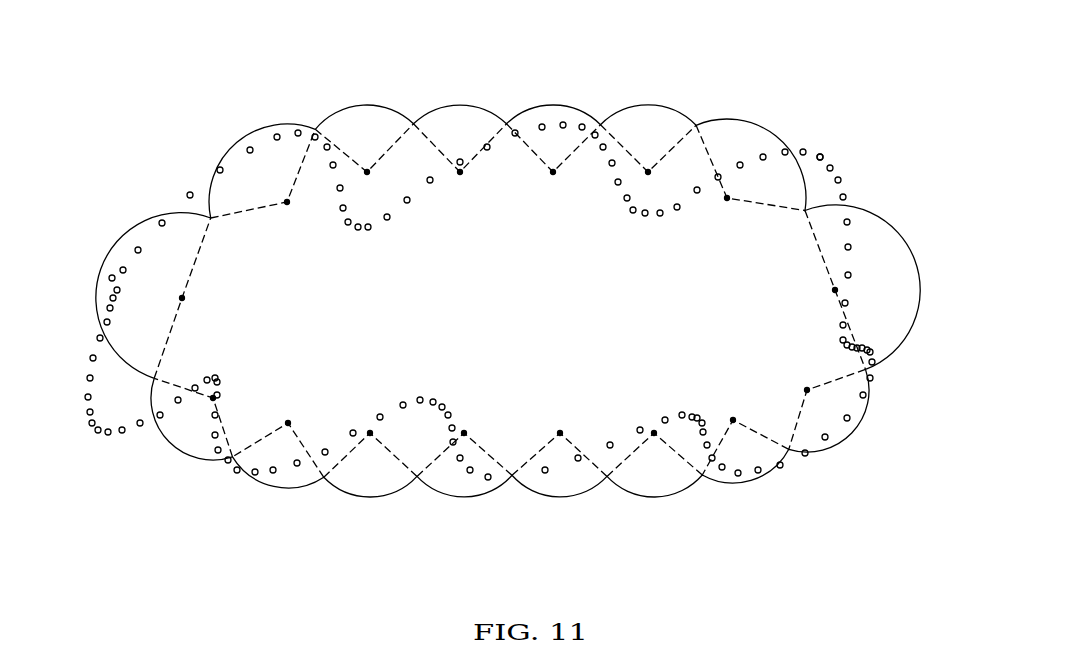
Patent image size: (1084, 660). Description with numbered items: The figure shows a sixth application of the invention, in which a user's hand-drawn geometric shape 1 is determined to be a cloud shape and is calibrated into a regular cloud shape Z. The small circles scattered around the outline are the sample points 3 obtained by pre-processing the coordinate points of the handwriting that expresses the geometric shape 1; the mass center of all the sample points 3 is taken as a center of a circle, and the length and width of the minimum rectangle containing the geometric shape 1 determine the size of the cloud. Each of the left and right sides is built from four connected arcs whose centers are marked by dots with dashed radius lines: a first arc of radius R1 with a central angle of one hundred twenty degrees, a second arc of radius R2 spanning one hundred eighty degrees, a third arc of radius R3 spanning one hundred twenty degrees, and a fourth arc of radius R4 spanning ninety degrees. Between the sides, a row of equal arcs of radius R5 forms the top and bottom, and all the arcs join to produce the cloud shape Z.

The cloud shape Z is at (655, 98).
The geometric figure 1 is at (829, 146).
The sample points 3 is at (833, 167).
The first arc radius R1 is at (508, 181).
The second arc radius R2 is at (509, 295).
The third arc radius R3 is at (509, 404).
The fourth arc radius R4 is at (511, 438).
The radius R5 arc center R5 is at (508, 301).